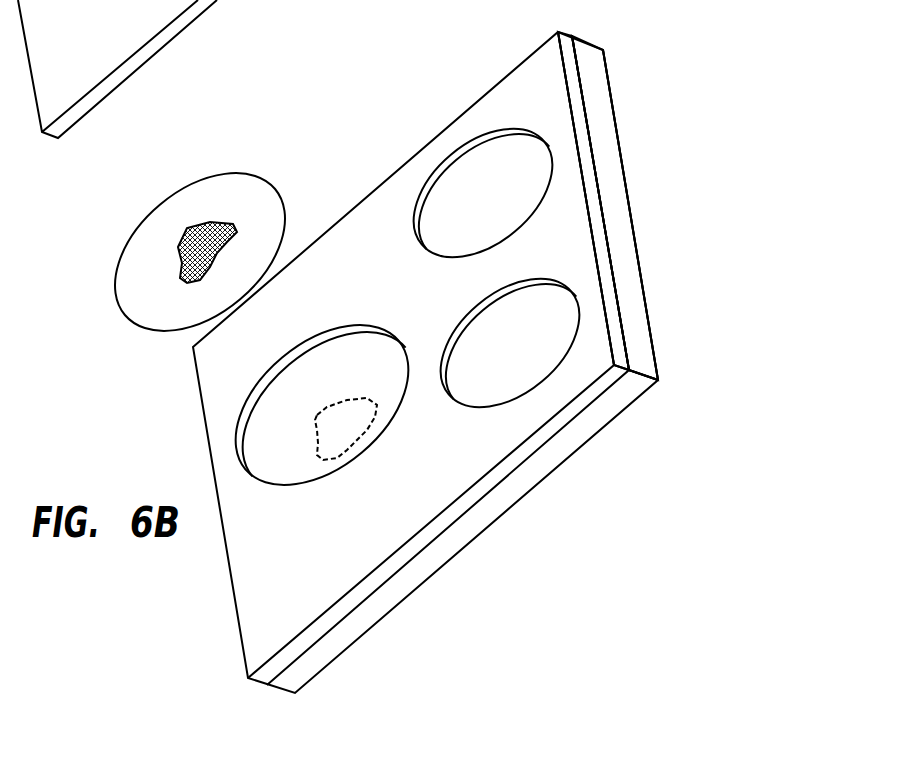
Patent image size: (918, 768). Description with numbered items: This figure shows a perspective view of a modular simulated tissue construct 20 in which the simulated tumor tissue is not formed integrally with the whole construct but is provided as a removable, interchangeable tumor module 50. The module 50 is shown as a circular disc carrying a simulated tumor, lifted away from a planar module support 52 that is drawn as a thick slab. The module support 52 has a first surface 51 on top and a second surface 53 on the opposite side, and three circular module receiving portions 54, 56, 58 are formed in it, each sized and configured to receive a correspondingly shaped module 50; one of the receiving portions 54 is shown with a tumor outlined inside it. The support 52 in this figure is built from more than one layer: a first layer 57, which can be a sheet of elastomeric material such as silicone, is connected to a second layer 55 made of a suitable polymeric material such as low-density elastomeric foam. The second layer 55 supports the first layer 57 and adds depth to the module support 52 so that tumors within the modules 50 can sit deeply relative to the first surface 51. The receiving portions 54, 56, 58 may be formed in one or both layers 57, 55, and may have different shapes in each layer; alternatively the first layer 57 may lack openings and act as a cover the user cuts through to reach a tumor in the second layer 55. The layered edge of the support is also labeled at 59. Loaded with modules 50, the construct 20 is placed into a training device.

The simulated tissue construct 20 is at (397, 130).
The tumor module 50 is at (206, 214).
The first surface 51 is at (602, 278).
The module support 52 is at (585, 130).
The second surface 53 is at (627, 185).
The module receiving portion 54 is at (390, 417).
The second layer 55 is at (637, 320).
The module receiving portion 56 is at (427, 252).
The first layer 57 is at (587, 160).
The module receiving portion 58 is at (542, 378).
The outer edge 59 is at (623, 227).